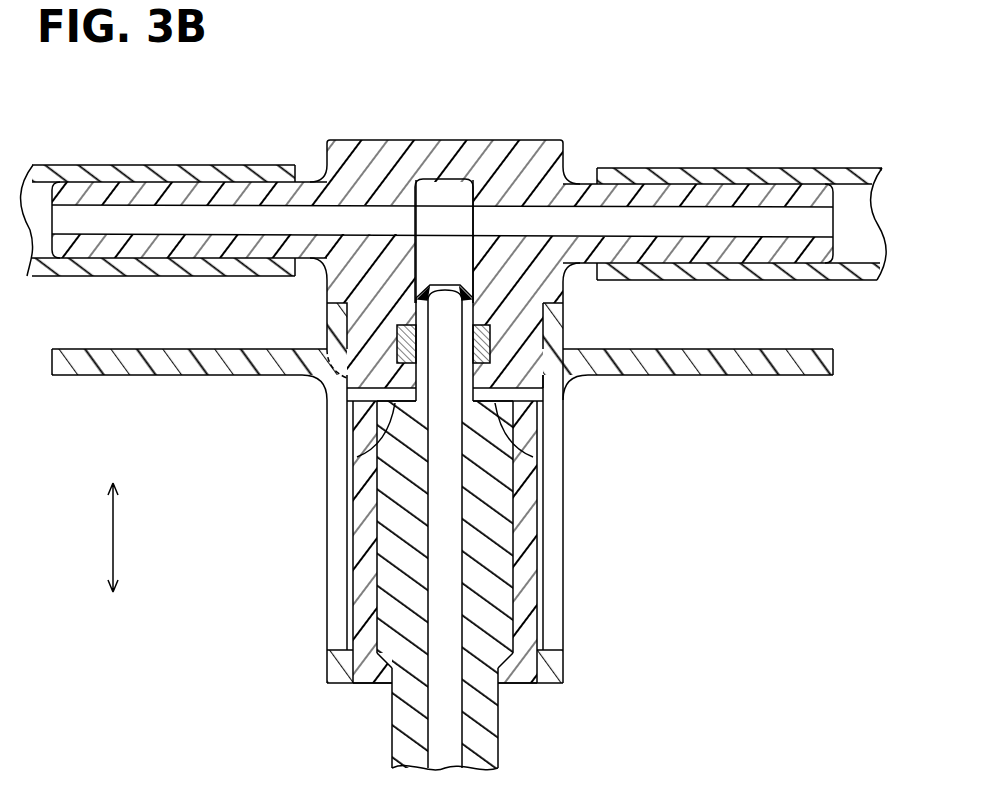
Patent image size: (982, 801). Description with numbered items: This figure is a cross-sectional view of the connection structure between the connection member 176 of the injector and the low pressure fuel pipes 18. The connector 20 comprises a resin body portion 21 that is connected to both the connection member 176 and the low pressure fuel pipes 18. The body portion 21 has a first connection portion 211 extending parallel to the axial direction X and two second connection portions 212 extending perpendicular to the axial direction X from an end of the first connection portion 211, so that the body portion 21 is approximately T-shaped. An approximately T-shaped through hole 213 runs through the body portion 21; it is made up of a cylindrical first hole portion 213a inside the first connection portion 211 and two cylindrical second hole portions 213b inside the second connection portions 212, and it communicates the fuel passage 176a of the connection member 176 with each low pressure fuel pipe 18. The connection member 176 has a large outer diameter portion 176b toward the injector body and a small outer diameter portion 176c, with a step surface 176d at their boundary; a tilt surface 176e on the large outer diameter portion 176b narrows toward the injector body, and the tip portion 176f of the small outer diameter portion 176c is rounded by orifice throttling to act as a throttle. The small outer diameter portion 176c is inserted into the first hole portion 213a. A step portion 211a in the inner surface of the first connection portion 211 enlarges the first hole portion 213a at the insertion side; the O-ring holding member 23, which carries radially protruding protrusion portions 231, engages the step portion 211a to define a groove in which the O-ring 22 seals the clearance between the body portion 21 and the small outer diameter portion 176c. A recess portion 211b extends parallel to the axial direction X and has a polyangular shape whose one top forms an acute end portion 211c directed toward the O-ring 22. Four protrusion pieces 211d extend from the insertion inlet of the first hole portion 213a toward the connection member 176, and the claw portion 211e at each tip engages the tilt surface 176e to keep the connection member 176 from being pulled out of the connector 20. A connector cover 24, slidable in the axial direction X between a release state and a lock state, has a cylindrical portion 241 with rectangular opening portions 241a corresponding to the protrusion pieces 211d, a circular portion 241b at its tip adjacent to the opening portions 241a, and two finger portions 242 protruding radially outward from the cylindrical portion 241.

The low pressure fuel pipe 18 is at (122, 165).
The second connection portion 212 is at (215, 180).
The connector 20 is at (326, 139).
The body portion 21 is at (566, 140).
The through hole 213 is at (567, 90).
The first hole portion 213a is at (443, 243).
The second hole portion 213b is at (360, 217).
The first connection portion 211 is at (330, 297).
The step portion 211a is at (570, 350).
The recess portion 211b is at (347, 393).
The end portion of the recess portion 211c is at (332, 355).
The protrusion piece 211d is at (367, 560).
The claw portion 211e is at (390, 628).
The O-ring 22 is at (400, 332).
The O-ring holding member 23 is at (353, 447).
The protrusion portion 231 is at (383, 427).
The connector cover 24 is at (326, 472).
The cylindrical portion 241 is at (563, 440).
The opening portion 241a is at (337, 533).
The circular portion 241b is at (340, 667).
The finger portion 242 is at (90, 372).
The connection member 176 is at (500, 738).
The fuel passage 176a is at (447, 636).
The large outer diameter portion 176b is at (490, 563).
The small outer diameter portion 176c is at (478, 320).
The step surface 176d is at (563, 400).
The tilt surface 176e is at (503, 686).
The tip portion 176f is at (466, 305).
The axial direction X is at (108, 537).